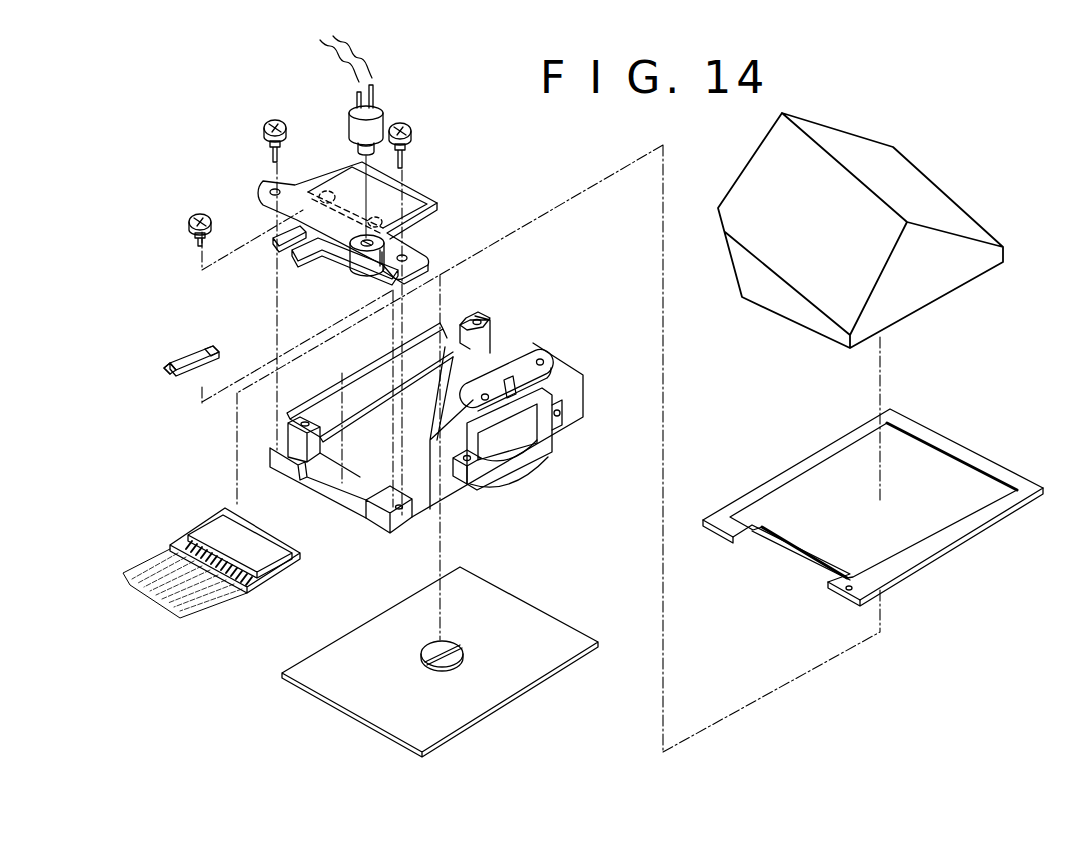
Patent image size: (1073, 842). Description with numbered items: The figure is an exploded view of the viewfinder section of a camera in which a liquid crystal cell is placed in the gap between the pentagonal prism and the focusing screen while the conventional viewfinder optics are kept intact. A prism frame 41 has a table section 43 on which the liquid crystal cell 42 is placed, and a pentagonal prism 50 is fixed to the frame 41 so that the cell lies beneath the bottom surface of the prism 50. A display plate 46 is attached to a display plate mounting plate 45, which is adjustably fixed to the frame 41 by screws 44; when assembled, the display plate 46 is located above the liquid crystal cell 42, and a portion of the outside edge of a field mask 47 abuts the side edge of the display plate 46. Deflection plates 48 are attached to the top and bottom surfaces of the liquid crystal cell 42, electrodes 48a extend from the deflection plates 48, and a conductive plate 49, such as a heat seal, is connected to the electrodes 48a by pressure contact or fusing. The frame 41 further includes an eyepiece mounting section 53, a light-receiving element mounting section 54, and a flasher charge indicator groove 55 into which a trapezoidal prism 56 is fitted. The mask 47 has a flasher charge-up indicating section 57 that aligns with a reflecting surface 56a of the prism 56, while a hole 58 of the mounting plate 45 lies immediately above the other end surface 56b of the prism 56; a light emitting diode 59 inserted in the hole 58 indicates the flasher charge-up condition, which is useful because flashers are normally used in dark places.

The prism frame 41 is at (566, 378).
The liquid crystal cell 42 is at (280, 569).
The table section 43 is at (357, 480).
The screws 44 is at (278, 120).
The display plate mounting plate 45 is at (345, 255).
The display plate 46 is at (433, 203).
The field mask 47 is at (933, 546).
The deflection plates 48 is at (258, 540).
The electrodes 48a is at (252, 585).
The conductive plate 49 is at (222, 612).
The pentagonal prism 50 is at (929, 305).
The eyepiece mounting section 53 is at (500, 443).
The light-receiving element mounting section 54 is at (512, 372).
The flasher charge indicator groove 55 is at (385, 529).
The trapezoidal prism 56 is at (197, 347).
The reflecting surface 56a is at (222, 346).
The other end surface 56b is at (190, 368).
The flasher charge-up indicating section 57 is at (845, 594).
The hole 58 is at (357, 240).
The light emitting diode 59 is at (349, 126).